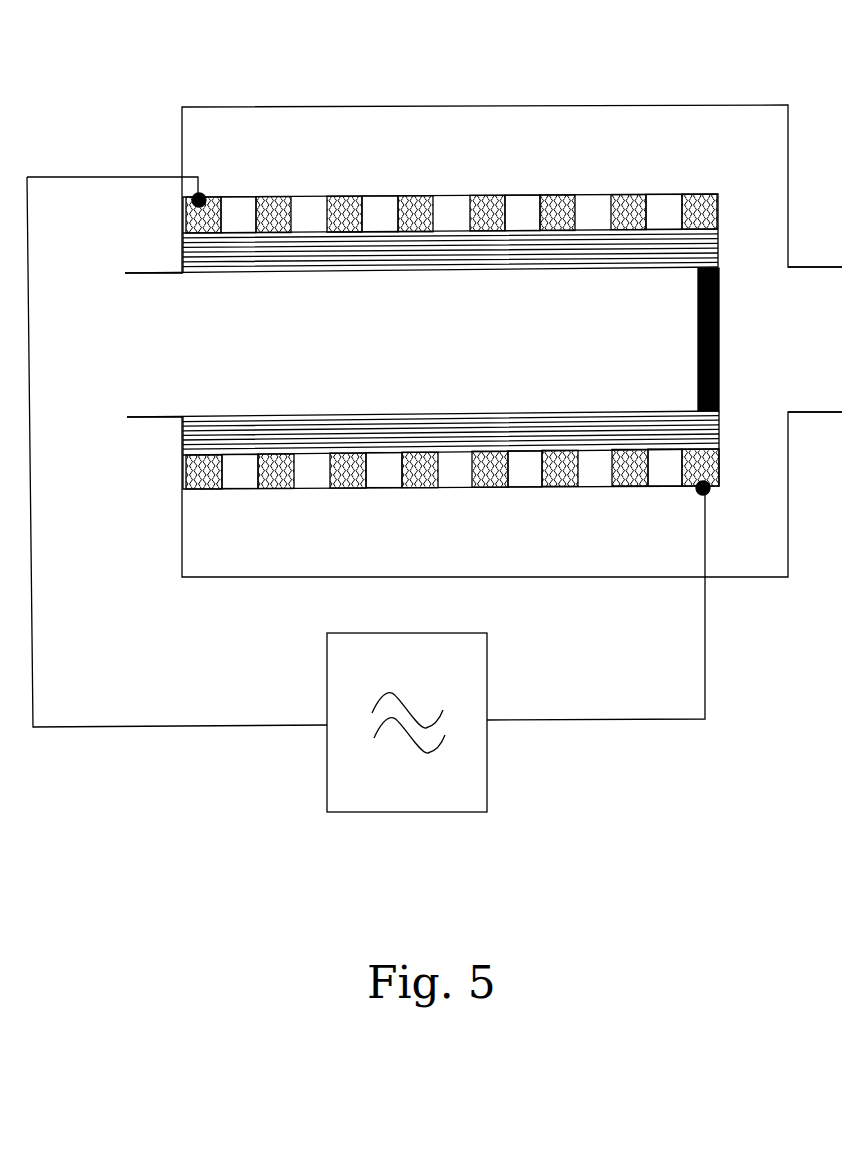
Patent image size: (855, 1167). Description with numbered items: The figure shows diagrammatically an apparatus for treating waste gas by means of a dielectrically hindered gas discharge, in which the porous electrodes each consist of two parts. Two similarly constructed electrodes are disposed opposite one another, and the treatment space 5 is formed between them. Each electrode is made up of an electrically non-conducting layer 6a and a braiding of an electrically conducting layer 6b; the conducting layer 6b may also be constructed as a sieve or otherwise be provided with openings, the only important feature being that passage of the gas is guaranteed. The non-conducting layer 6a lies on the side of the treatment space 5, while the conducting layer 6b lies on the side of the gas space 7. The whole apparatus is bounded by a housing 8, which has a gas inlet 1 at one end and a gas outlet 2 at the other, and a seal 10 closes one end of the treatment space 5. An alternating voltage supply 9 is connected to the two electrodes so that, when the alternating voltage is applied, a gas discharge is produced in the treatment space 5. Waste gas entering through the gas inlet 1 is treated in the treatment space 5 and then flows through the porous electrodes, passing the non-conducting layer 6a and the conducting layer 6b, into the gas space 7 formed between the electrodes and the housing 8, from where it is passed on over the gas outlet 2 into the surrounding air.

The gas inlet 1 is at (154, 345).
The gas outlet 2 is at (815, 339).
The treatment space 5 is at (211, 348).
The electrically non-conducting layer 6a is at (312, 198).
The electrically conducting layer 6b is at (417, 195).
The gas space 7 is at (612, 542).
The housing 8 is at (582, 578).
The alternating voltage supply 9 is at (458, 650).
The seal 10 is at (718, 360).